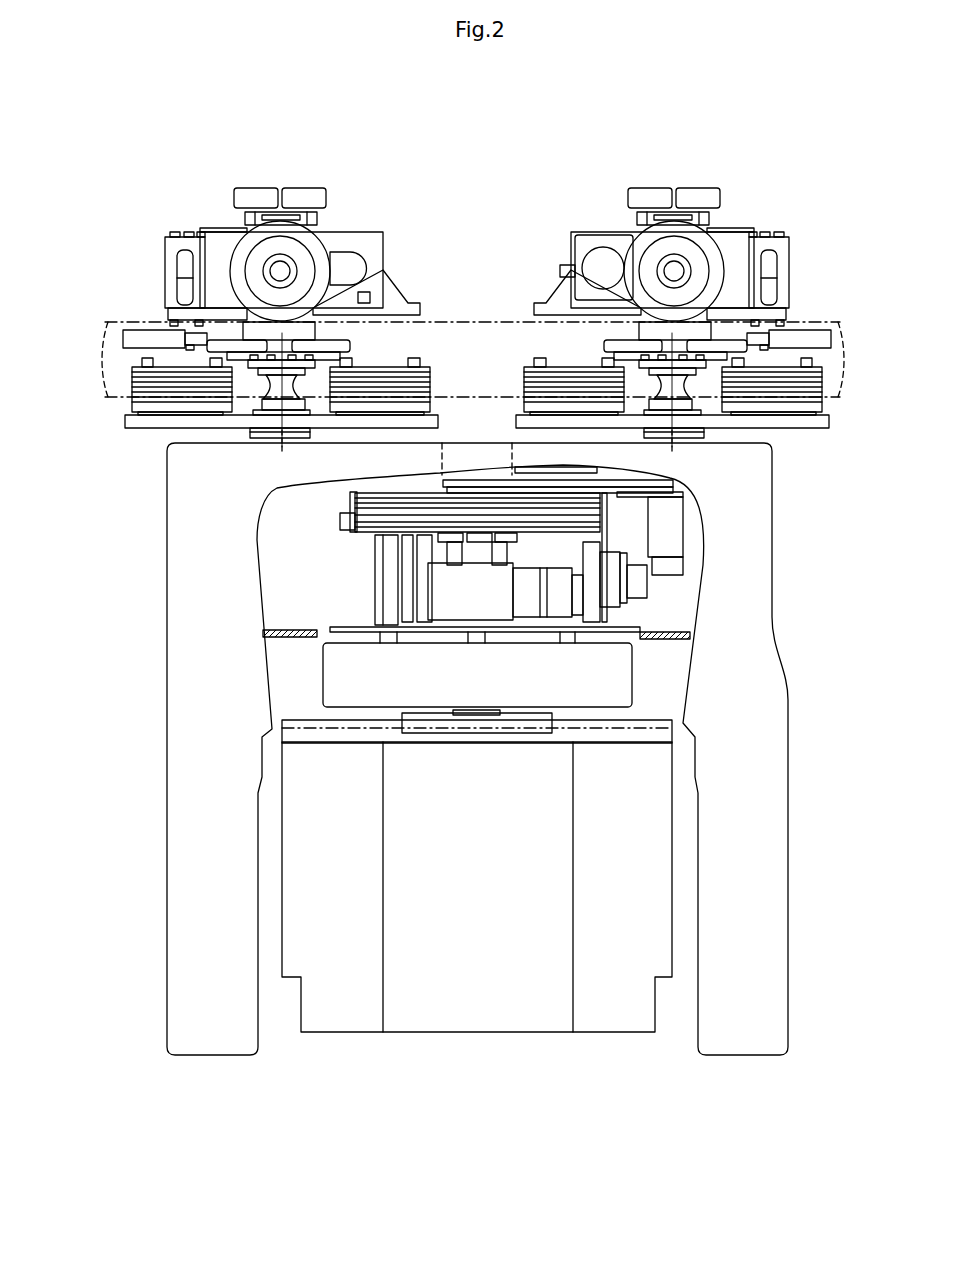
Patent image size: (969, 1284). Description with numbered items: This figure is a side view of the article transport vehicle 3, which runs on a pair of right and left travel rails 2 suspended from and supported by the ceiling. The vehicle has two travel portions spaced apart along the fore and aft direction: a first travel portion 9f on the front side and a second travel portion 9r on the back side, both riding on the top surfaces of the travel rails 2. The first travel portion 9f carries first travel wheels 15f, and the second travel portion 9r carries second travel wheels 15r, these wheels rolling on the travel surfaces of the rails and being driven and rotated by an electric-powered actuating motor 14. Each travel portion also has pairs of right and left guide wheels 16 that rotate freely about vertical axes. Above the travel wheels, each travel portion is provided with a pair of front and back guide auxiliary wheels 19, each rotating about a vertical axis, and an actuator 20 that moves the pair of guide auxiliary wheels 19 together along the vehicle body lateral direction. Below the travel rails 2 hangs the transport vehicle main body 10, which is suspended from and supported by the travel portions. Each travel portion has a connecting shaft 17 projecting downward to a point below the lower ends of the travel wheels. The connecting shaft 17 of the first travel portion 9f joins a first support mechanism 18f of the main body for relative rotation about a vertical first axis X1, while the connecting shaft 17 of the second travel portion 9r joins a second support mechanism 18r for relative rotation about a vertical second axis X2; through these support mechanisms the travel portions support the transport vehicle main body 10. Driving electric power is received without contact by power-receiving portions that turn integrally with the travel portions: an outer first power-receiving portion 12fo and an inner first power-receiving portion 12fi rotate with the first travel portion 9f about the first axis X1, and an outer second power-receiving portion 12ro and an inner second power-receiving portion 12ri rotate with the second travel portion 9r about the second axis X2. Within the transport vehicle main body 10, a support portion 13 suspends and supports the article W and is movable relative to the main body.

The travel rails 2 is at (110, 407).
The article transport vehicle 3 is at (800, 815).
The first travel portion 9f is at (335, 172).
The second travel portion 9r is at (733, 150).
The transport vehicle main body 10 is at (778, 708).
The outer first power-receiving portion 12fo is at (193, 400).
The inner first power-receiving portion 12fi is at (425, 372).
The inner second power-receiving portion 12ri is at (540, 372).
The outer second power-receiving portion 12ro is at (790, 405).
The support portion 13 is at (298, 672).
The actuating motor 14 is at (582, 265).
The first travel wheels 15f is at (320, 248).
The second travel wheels 15r is at (712, 258).
The guide wheels 16 is at (215, 345).
The connecting shaft 17 is at (290, 387).
The first support mechanism 18f is at (293, 437).
The second support mechanism 18r is at (683, 437).
The guide auxiliary wheels 19 is at (300, 190).
The actuator 20 is at (165, 260).
The first axis X1 is at (277, 443).
The second axis X2 is at (697, 455).
The article W is at (472, 1020).